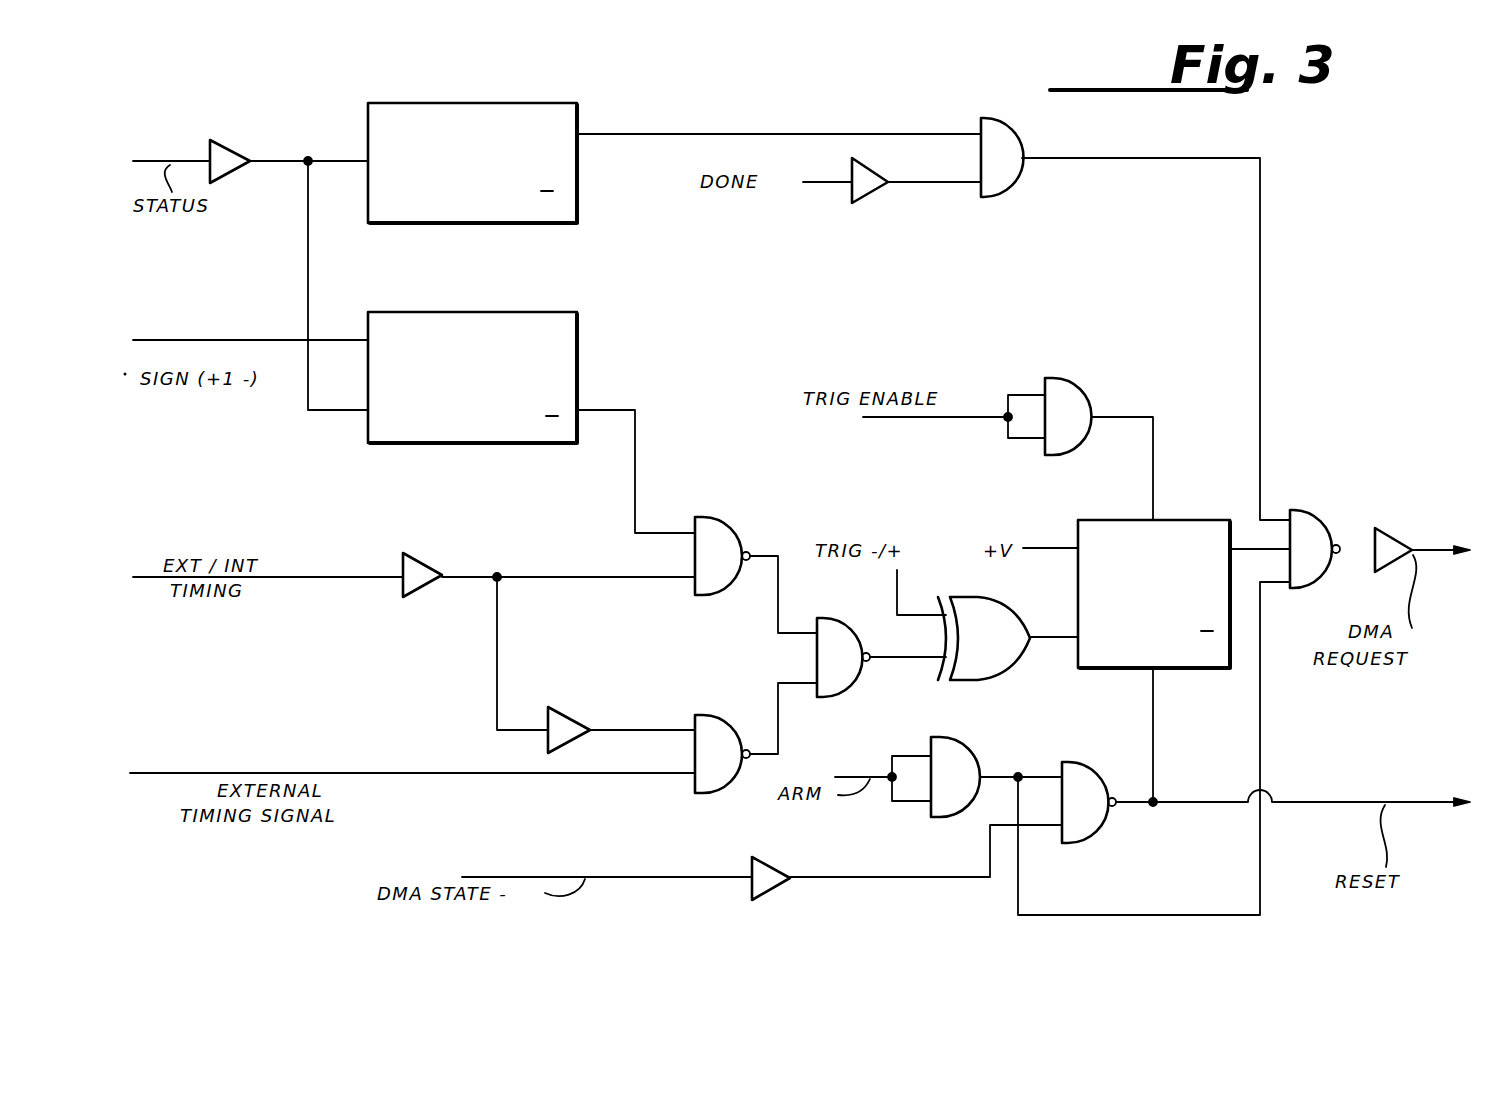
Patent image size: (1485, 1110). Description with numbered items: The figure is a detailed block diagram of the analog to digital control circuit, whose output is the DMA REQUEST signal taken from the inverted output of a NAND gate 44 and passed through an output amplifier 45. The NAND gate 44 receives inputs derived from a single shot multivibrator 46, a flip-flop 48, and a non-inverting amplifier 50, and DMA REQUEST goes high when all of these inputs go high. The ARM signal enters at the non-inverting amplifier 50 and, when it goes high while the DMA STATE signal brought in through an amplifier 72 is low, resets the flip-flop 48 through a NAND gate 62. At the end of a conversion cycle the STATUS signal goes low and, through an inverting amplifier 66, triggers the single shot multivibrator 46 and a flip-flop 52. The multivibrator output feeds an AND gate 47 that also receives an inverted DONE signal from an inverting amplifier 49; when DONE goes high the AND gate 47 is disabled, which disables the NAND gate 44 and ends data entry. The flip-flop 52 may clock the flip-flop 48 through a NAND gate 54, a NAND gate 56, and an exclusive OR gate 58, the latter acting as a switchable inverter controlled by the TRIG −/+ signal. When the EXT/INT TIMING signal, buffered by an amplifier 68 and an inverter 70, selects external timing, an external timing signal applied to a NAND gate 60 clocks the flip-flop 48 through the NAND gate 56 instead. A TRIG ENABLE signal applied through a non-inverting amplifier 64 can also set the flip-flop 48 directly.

The NAND gate 44 is at (1312, 518).
The DMA request buffer 45 is at (1395, 540).
The single shot multivibrator 46 is at (505, 102).
The AND gate 47 is at (1005, 190).
The flip-flop 48 is at (1190, 520).
The inverting amplifier 49 is at (870, 192).
The non-inverting amplifier 50 is at (963, 740).
The flip-flop 52 is at (577, 350).
The NAND gate 54 is at (725, 520).
The NAND gate 56 is at (845, 690).
The exclusive OR gate 58 is at (1015, 612).
The NAND gate 60 is at (718, 718).
The NAND gate 62 is at (1090, 768).
The non-inverting amplifier 64 is at (1078, 388).
The inverting amplifier 66 is at (226, 142).
The timing buffer 68 is at (428, 558).
The inverting buffer 70 is at (568, 717).
The DMA state buffer 72 is at (775, 864).